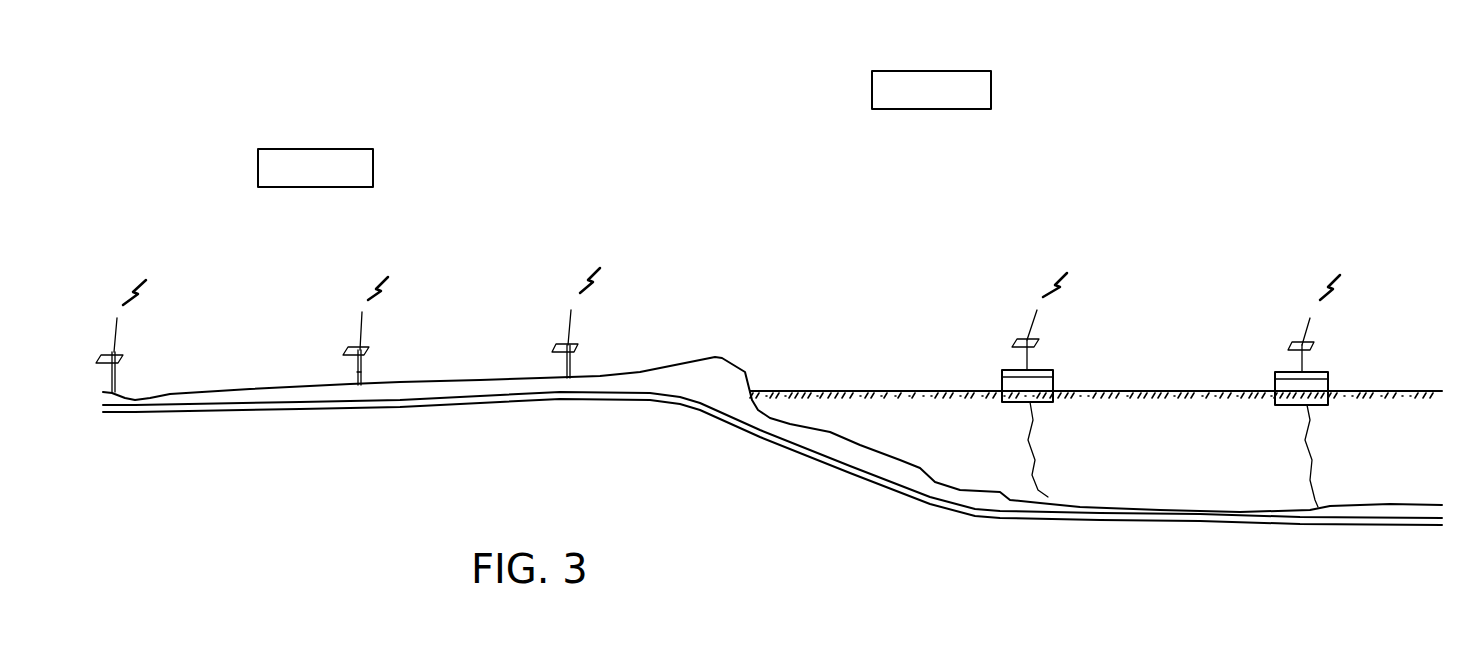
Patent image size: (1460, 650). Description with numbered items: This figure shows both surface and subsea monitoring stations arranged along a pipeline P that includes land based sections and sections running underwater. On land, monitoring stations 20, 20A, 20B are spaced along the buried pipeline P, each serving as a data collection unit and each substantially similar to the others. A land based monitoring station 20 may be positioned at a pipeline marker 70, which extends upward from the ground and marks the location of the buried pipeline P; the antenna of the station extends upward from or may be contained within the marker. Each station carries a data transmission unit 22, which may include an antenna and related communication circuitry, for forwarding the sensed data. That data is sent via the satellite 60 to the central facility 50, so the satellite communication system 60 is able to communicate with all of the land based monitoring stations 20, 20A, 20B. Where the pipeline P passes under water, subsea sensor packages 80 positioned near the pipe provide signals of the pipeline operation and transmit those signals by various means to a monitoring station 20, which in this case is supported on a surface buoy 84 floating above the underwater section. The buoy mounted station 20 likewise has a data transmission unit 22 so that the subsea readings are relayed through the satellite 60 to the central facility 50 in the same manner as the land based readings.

The monitoring station 20 is at (630, 332).
The land based monitoring station 20A is at (412, 344).
The land based monitoring station 20B is at (170, 348).
The data transmission unit 22 is at (570, 310).
The central facility 50 is at (288, 149).
The satellite 60 is at (890, 71).
The pipeline marker 70 is at (357, 370).
The subsea sensor package 80 is at (1080, 502).
The surface buoy 84 is at (1000, 375).
The pipeline P is at (518, 393).